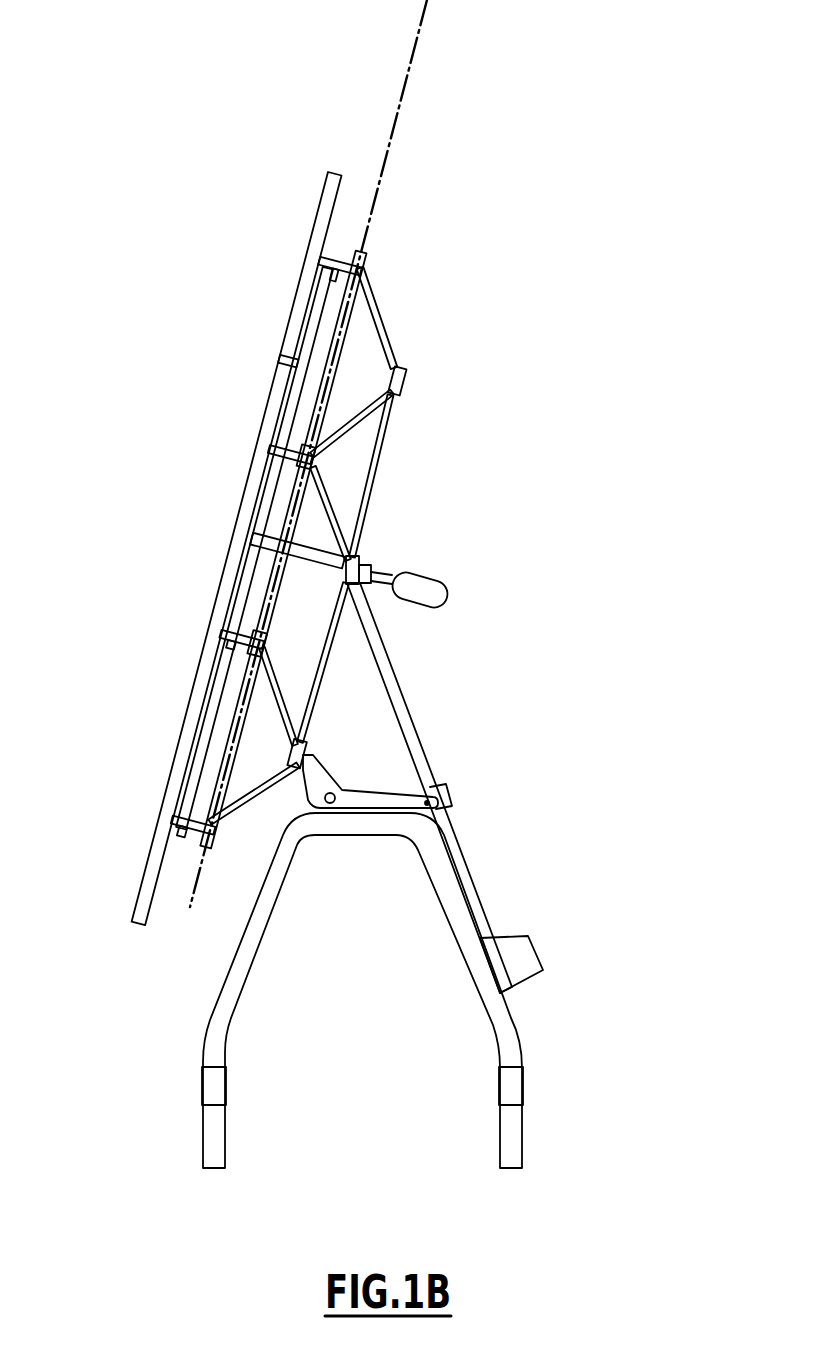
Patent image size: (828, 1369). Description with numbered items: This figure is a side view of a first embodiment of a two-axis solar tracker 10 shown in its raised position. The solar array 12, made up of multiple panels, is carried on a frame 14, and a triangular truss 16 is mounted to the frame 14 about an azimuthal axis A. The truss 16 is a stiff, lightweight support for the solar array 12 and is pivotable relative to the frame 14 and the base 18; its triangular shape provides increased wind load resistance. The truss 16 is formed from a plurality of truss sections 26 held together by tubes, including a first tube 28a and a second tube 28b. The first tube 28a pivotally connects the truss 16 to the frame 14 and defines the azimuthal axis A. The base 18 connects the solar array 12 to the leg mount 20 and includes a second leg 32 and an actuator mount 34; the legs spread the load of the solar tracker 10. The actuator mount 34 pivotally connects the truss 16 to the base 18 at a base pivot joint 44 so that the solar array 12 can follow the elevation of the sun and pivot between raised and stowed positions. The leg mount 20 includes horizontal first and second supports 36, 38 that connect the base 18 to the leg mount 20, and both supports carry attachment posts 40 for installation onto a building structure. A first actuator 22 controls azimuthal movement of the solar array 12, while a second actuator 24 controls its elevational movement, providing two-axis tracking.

The two-axis solar tracker 10 is at (495, 269).
The solar array 12 is at (318, 194).
The frame 14 is at (352, 250).
The truss 16 is at (353, 584).
The base 18 is at (378, 990).
The leg mount 20 is at (497, 985).
The first actuator 22 is at (425, 572).
The second actuator 24 is at (461, 788).
The truss sections 26 is at (368, 412).
The first tube 28a is at (363, 290).
The second tube 28b is at (377, 468).
The second leg 32 is at (457, 923).
The actuator mount 34 is at (345, 770).
The first support 36 is at (205, 1090).
The second support 38 is at (523, 1083).
The attachment posts 40 is at (225, 1150).
The base pivot joint 44 is at (312, 742).
The azimuthal axis A is at (413, 46).